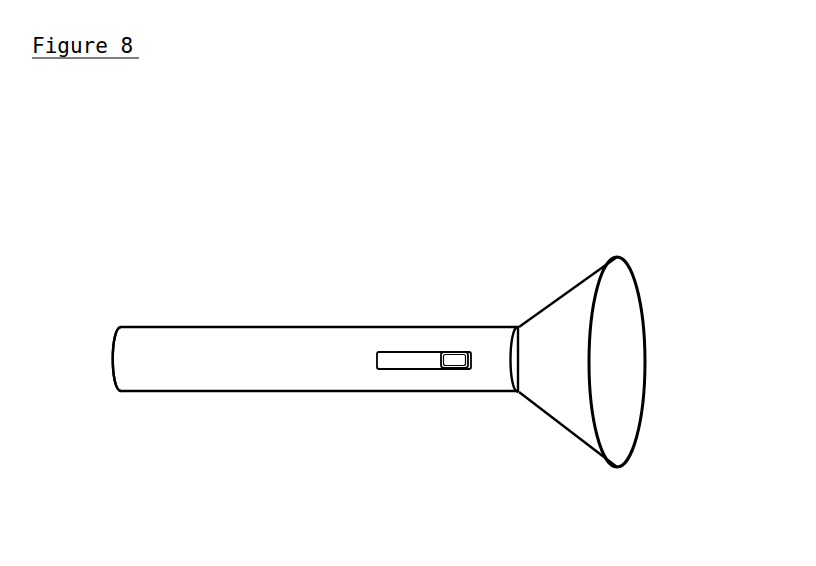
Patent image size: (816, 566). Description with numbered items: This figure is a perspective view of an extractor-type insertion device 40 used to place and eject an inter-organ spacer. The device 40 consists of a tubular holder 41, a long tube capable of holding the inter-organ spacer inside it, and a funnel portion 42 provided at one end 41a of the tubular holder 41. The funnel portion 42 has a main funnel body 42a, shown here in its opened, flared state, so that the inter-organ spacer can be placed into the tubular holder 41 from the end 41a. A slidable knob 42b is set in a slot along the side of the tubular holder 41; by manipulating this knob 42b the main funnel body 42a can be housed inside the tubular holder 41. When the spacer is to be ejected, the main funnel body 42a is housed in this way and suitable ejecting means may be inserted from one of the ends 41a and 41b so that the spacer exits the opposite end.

The extractor-type insertion device 40 is at (342, 297).
The tubular holder 41 is at (299, 410).
The one end of the tubular holder 41a is at (519, 361).
The other end of the tubular holder 41b is at (106, 357).
The funnel portion 42 is at (511, 330).
The main funnel body 42a is at (558, 300).
The slidable knob 42b is at (436, 310).